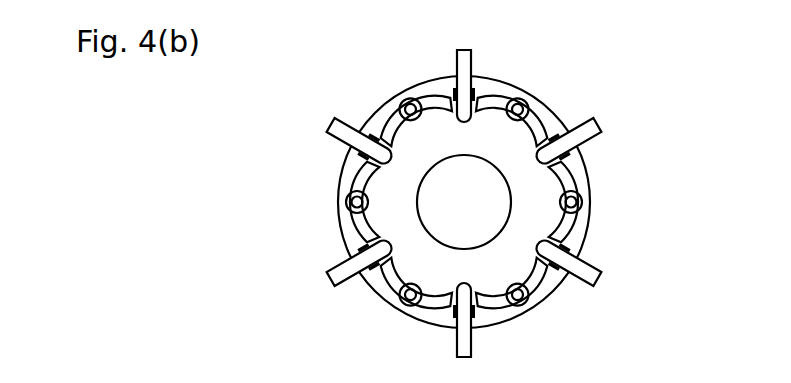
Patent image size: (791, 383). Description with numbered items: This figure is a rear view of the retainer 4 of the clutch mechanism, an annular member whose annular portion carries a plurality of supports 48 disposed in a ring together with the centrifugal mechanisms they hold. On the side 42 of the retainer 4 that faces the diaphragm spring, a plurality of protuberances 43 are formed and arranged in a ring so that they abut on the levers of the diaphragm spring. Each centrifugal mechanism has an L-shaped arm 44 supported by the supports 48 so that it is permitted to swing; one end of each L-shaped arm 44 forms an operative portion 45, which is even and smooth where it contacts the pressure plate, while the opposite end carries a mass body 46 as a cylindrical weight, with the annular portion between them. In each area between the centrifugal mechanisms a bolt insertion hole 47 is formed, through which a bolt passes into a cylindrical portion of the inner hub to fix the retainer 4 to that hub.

The retainer 4 is at (504, 185).
The side 42 is at (542, 290).
The protuberances 43 is at (430, 80).
The L-shaped arms 44 is at (600, 285).
The operative portion 45 is at (592, 134).
The mass body 46 is at (464, 203).
The bolt insertion hole 47 is at (522, 107).
The supports 48 is at (370, 281).